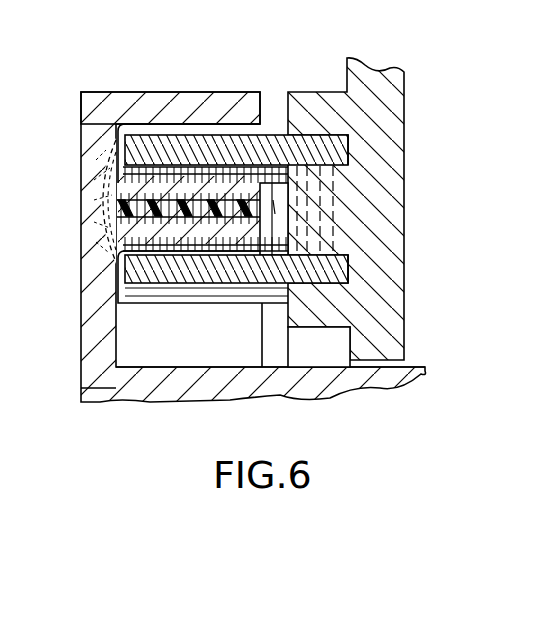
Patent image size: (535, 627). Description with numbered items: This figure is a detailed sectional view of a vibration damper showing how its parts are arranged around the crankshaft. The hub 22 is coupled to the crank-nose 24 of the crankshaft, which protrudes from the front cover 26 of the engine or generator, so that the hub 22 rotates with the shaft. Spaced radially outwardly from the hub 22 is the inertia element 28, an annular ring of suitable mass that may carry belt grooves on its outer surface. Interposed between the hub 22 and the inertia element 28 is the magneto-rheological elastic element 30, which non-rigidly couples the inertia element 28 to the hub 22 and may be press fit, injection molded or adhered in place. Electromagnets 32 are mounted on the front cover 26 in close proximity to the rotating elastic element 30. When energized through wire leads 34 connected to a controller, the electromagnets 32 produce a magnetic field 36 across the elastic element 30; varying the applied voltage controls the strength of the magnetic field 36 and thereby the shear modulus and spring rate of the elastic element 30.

The hub 22 is at (92, 352).
The crank-nose 24 is at (178, 387).
The front cover 26 is at (390, 221).
The inertia element 28 is at (160, 92).
The magneto-rheological elastic element 30 is at (117, 210).
The electromagnets 32 is at (272, 135).
The wire leads 34 is at (348, 150).
The magnetic field 36 is at (95, 150).